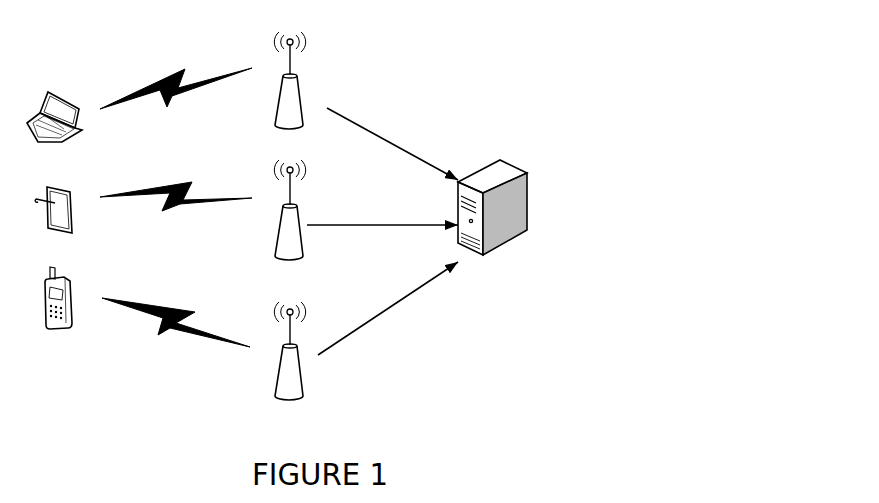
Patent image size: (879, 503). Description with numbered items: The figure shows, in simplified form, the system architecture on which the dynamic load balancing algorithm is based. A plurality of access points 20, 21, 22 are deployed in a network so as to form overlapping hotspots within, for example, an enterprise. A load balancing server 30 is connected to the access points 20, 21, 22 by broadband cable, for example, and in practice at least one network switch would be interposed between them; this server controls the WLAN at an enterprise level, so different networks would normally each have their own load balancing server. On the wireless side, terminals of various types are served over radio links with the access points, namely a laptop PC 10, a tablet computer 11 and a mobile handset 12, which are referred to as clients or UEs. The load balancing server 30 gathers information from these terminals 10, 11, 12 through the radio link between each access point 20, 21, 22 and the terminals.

The laptop PC 10 is at (54, 104).
The tablet computer 11 is at (51, 190).
The mobile handset 12 is at (51, 285).
The access point 20 is at (275, 71).
The access point 21 is at (275, 202).
The access point 22 is at (275, 340).
The load balancing server 30 is at (504, 194).